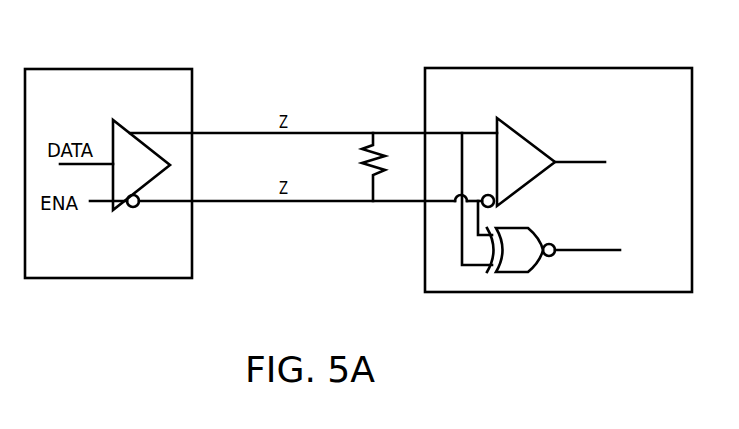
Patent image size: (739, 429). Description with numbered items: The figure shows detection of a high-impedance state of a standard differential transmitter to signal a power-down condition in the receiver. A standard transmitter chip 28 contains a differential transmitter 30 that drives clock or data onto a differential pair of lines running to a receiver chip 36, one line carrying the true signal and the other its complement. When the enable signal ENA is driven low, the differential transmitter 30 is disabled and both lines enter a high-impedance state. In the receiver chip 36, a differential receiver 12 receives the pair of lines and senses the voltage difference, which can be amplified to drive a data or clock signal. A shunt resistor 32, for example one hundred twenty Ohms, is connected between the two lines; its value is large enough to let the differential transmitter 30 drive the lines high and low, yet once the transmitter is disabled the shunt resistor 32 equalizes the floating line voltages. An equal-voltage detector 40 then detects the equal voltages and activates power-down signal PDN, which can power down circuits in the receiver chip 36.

The transmitter chip 28 is at (53, 104).
The differential transmitter 30 is at (140, 176).
The shunt resistor 32 is at (360, 162).
The receiver chip 36 is at (668, 104).
The differential receiver 12 is at (525, 174).
The equal-voltage detector 40 is at (545, 210).